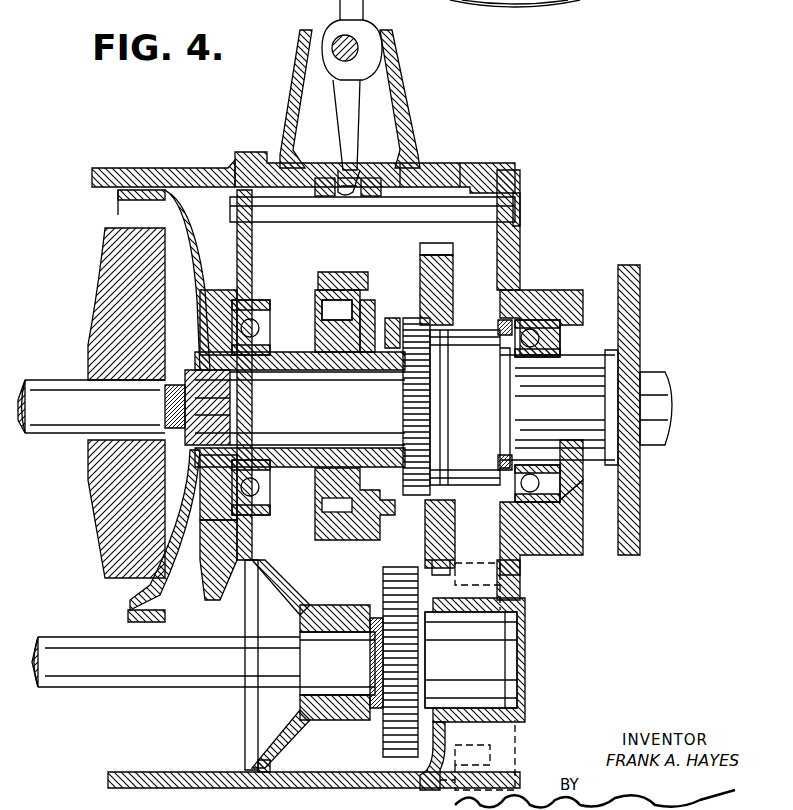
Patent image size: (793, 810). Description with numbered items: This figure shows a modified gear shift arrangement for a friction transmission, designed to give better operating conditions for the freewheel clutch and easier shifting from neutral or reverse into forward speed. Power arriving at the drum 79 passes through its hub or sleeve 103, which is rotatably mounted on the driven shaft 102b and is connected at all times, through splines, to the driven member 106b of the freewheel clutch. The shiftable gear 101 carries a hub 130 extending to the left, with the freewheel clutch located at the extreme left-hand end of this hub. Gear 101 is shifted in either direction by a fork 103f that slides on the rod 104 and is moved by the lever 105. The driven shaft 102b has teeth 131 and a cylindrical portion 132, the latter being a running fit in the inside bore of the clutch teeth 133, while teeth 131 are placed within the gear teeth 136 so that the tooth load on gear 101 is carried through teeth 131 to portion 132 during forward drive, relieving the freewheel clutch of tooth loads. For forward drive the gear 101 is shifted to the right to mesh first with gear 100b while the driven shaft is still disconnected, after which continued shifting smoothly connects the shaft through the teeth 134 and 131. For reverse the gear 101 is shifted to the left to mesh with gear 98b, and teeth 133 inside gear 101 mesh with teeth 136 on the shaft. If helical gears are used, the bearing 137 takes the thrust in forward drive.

The drum 79 is at (163, 195).
The reverse gear 98b is at (392, 730).
The forward gear 100b is at (515, 577).
The shiftable gear 101 is at (445, 268).
The driven shaft 102b is at (618, 430).
The sleeve 103 is at (272, 362).
The fork 103f is at (372, 182).
The rod 104 is at (455, 208).
The lever 105 is at (338, 3).
The driven member of the freewheel clutch 106b is at (322, 327).
The hub 130 is at (343, 274).
The teeth 131 is at (395, 325).
The cylindrical portion 132 is at (478, 485).
The clutch teeth 133 is at (470, 328).
The teeth 134 is at (388, 305).
The gear teeth 136 is at (414, 488).
The bearing 137 is at (238, 525).